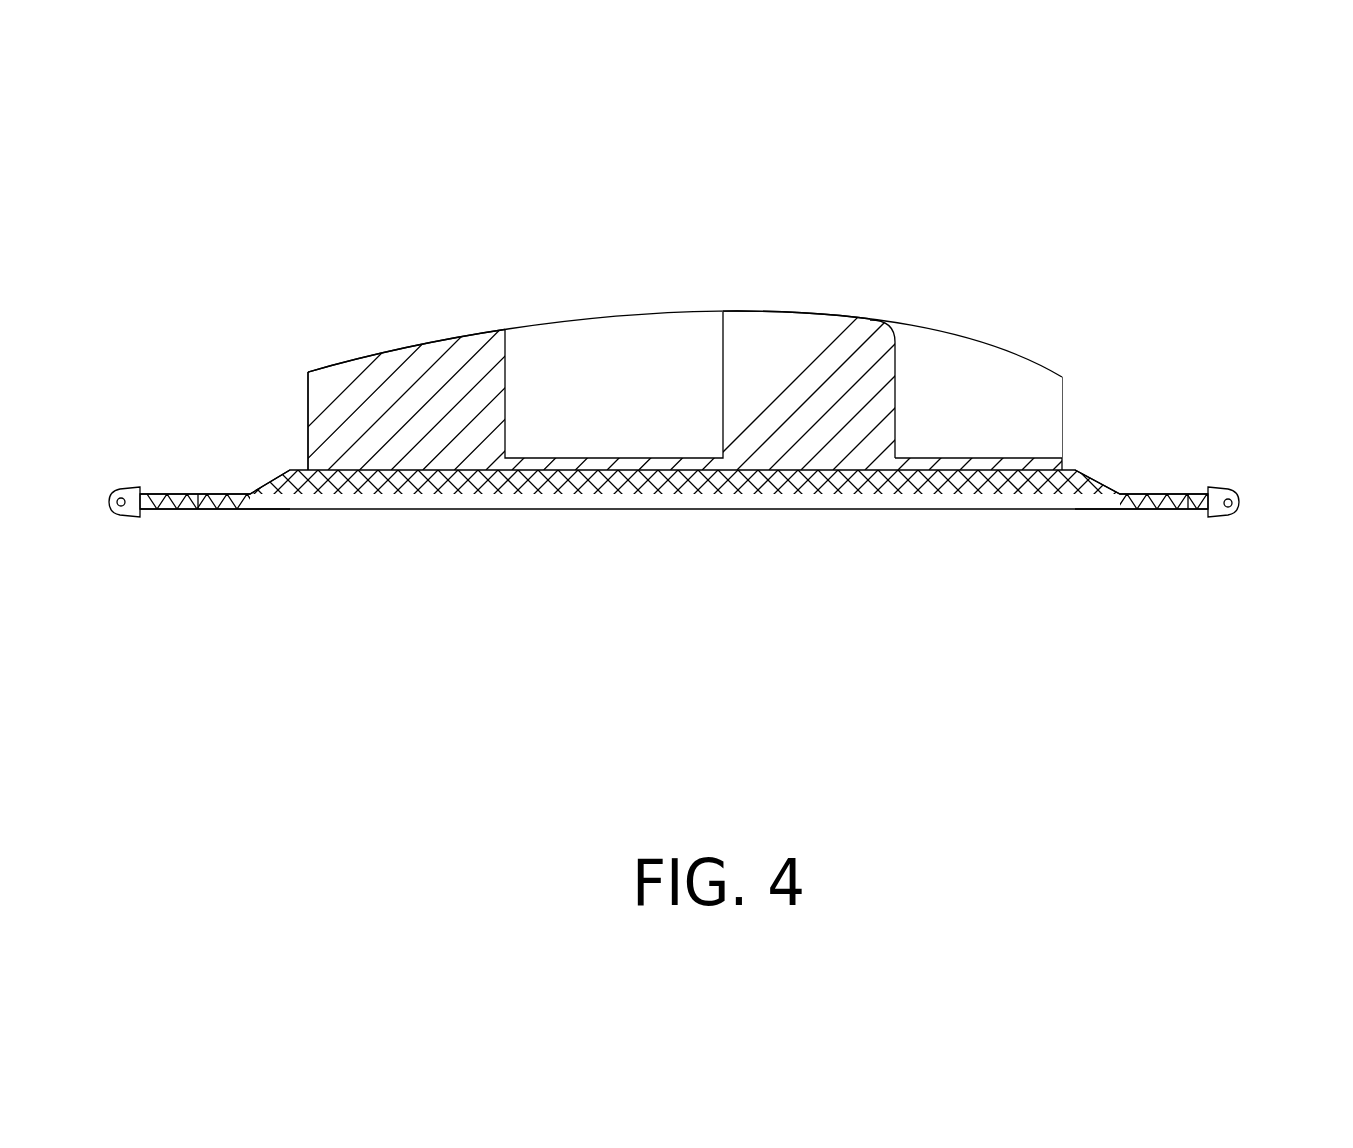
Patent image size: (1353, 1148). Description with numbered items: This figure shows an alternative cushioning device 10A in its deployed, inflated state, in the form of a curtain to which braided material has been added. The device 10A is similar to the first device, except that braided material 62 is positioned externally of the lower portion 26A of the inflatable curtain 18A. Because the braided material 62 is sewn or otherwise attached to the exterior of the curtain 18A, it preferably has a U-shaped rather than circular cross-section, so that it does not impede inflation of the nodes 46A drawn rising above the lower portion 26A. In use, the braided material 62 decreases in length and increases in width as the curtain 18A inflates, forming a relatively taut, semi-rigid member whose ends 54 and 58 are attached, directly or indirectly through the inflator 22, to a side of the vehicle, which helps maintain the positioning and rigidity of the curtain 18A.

The alternative device 10A is at (1118, 262).
The curtain 18A is at (298, 420).
The nodes 46A is at (803, 370).
The end 54 is at (163, 500).
The lower portion 26A is at (1120, 478).
The braided material 62 is at (708, 493).
The inflator 22 is at (117, 506).
The end 58 is at (1232, 513).